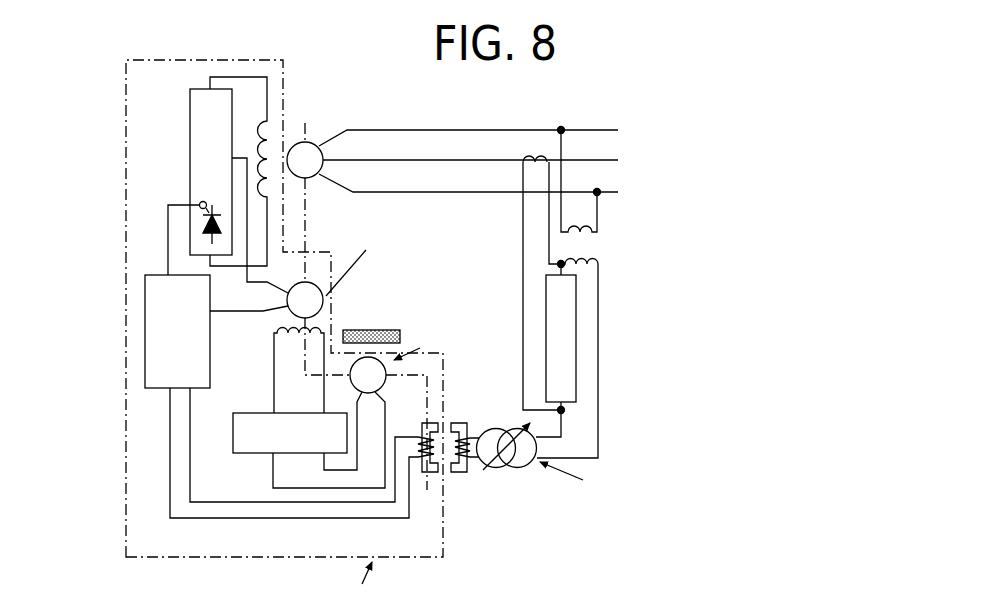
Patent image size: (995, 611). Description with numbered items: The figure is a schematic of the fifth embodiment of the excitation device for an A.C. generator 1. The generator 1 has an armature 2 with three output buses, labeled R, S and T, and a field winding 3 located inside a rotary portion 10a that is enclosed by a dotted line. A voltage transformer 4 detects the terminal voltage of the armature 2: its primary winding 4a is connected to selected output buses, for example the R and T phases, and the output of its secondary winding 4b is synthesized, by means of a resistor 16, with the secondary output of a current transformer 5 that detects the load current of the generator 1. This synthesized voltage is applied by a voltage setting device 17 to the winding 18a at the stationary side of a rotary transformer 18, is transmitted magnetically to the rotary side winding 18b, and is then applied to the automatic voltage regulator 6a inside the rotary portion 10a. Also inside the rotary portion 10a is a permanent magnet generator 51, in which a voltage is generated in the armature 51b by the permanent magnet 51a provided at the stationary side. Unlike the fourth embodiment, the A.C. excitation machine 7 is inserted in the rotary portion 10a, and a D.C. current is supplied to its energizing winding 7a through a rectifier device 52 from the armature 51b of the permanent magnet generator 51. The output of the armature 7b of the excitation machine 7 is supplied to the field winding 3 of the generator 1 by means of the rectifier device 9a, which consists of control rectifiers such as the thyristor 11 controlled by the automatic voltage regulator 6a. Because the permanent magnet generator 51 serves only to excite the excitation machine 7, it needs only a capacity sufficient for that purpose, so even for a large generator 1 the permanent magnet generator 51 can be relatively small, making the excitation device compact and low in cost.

The A.C. generator 1 is at (287, 138).
The armature 2 is at (314, 144).
The field winding 3 is at (264, 132).
The voltage transformer 4 is at (591, 293).
The primary winding 4a is at (599, 236).
The secondary winding 4b is at (588, 266).
The current transformer 5 is at (524, 160).
The automatic voltage regulator 6a is at (212, 347).
The A.C. excitation machine 7 is at (372, 307).
The energizing winding 7a is at (277, 334).
The armature 7b is at (308, 280).
The rectifier device 9a is at (189, 128).
The rotary portion 10a is at (123, 346).
The thyristor 11 is at (204, 223).
The resistor 16 is at (577, 350).
The voltage setting device 17 is at (534, 468).
The rotary transformer 18 is at (446, 490).
The stationary side winding 18a is at (462, 472).
The rotary side winding 18b is at (426, 473).
The permanent magnet generator 51 is at (396, 382).
The permanent magnet 51a is at (370, 330).
The armature 51b is at (382, 387).
The rectifier device 52 is at (260, 454).